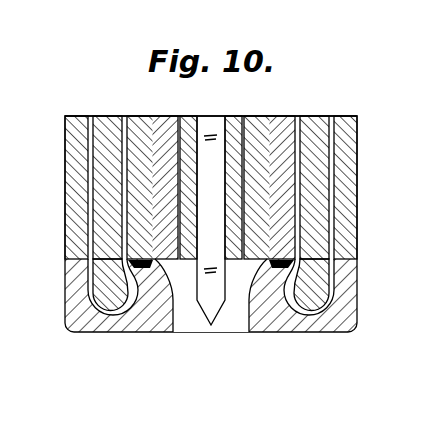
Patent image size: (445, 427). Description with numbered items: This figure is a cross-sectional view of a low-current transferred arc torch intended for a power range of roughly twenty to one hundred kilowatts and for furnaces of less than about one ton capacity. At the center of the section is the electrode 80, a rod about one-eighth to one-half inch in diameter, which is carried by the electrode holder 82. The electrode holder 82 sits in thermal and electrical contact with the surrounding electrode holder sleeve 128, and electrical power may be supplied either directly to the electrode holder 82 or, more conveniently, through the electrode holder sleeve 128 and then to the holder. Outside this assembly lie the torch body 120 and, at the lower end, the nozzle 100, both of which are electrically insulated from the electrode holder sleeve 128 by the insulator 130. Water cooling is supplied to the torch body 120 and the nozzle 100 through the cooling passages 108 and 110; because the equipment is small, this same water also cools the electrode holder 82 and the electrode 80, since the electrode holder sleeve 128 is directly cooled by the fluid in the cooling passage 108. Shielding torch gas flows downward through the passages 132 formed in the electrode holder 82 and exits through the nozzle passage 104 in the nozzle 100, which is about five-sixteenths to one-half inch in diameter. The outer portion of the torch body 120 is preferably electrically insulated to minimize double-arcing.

The electrode 80 is at (195, 324).
The electrode holder 82 is at (188, 116).
The nozzle 100 is at (358, 312).
The nozzle passage 104 is at (231, 327).
The cooling passage 108 is at (298, 116).
The cooling passage 110 is at (333, 114).
The torch body 120 is at (360, 163).
The electrode holder sleeve 128 is at (165, 116).
The insulator 130 is at (244, 330).
The passages 132 is at (243, 116).